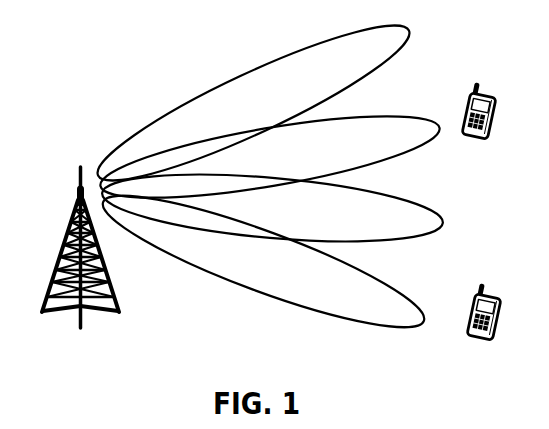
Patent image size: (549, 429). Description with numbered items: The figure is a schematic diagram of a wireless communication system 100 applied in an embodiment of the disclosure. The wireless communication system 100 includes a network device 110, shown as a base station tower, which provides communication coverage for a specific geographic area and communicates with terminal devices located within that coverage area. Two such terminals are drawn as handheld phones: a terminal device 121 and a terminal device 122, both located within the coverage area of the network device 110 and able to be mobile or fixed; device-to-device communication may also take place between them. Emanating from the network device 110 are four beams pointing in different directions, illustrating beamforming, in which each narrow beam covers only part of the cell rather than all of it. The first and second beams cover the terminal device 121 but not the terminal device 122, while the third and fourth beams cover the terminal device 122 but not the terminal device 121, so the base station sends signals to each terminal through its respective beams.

The wireless communication system 100 is at (80, 47).
The network device 110 is at (64, 220).
The terminal device 121 is at (461, 101).
The terminal device 122 is at (462, 306).